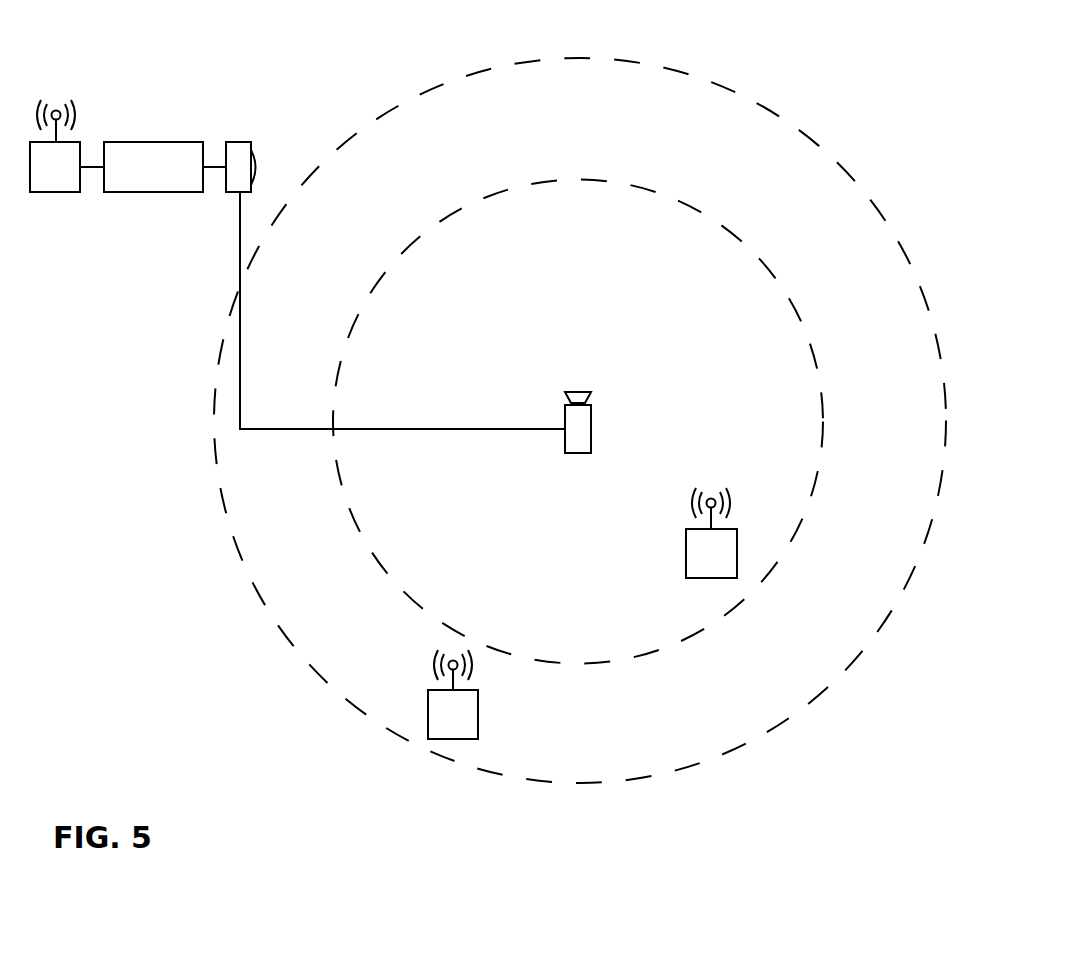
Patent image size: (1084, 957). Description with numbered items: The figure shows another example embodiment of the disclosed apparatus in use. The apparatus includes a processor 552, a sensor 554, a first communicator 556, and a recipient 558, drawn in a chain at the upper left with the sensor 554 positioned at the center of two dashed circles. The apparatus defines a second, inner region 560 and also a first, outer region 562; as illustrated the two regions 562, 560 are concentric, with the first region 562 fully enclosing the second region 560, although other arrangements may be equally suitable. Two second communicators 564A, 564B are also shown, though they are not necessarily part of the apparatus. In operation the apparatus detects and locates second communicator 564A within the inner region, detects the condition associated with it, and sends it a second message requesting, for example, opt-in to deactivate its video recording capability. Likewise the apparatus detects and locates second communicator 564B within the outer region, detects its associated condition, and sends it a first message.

The processor 552 is at (153, 167).
The sensor 554 is at (563, 444).
The first communicator 556 is at (55, 146).
The recipient 558 is at (226, 193).
The second (inner) region 560 is at (578, 422).
The first (outer) region 562 is at (580, 420).
The second communicator 564A is at (711, 533).
The second communicator 564B is at (453, 694).